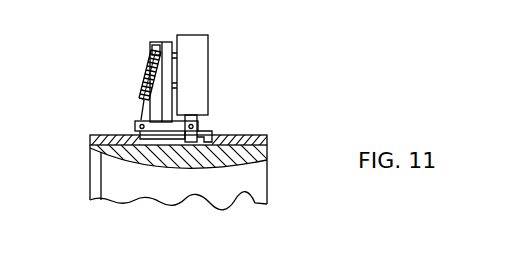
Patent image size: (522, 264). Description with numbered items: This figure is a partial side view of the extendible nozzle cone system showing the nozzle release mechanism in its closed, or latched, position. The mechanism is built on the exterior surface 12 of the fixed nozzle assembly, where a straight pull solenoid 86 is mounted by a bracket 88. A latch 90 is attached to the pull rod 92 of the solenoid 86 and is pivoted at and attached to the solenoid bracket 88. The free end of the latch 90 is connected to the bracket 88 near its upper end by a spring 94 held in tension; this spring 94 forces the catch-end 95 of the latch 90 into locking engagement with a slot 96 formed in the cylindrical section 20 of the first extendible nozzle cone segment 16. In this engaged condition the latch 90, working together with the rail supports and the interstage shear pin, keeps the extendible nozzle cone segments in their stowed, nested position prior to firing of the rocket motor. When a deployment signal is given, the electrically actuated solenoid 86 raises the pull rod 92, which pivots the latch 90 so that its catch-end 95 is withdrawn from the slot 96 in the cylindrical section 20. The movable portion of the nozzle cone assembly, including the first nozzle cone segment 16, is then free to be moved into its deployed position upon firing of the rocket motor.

The outer surface 12 is at (101, 171).
The first extendible nozzle cone segment 16 is at (268, 138).
The cylindrical section 20 is at (260, 142).
The straight pull solenoid 86 is at (210, 64).
The bracket 88 is at (167, 50).
The latch 90 is at (203, 130).
The pull rod 92 is at (192, 114).
The spring 94 is at (143, 85).
The catch-end 95 is at (209, 135).
The slot 96 is at (237, 158).